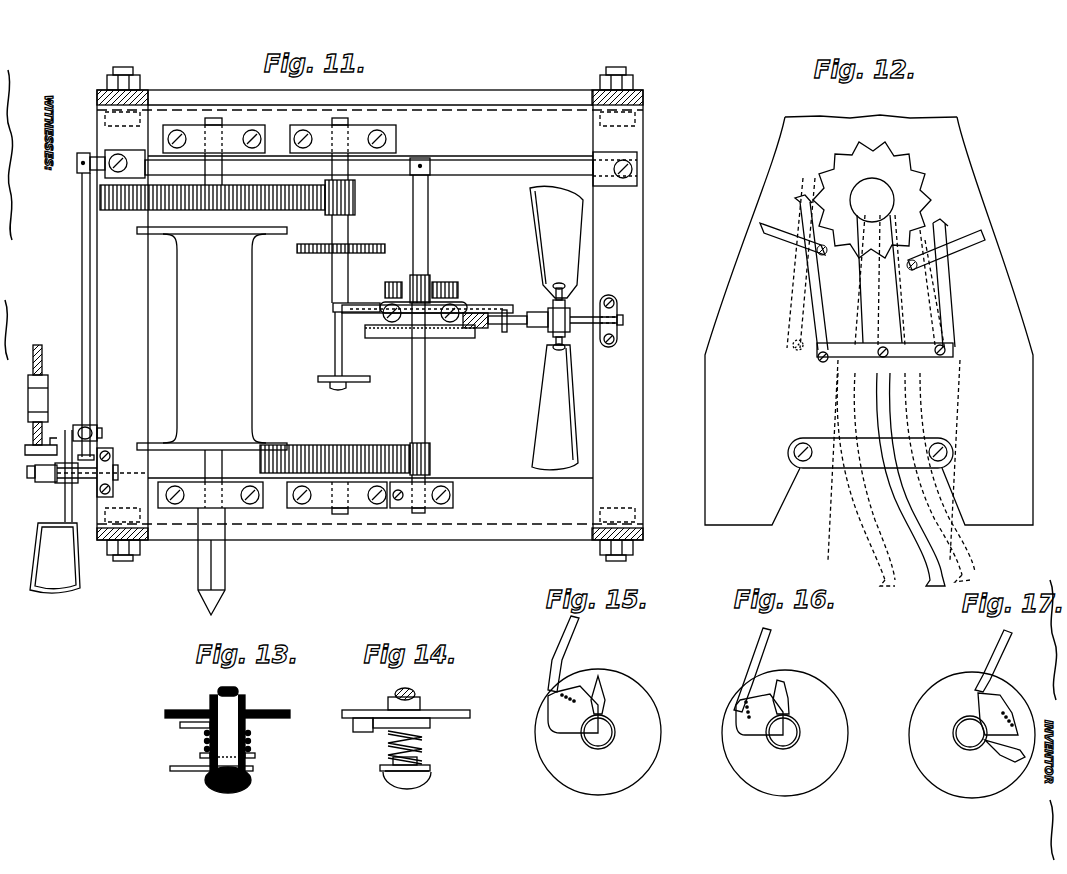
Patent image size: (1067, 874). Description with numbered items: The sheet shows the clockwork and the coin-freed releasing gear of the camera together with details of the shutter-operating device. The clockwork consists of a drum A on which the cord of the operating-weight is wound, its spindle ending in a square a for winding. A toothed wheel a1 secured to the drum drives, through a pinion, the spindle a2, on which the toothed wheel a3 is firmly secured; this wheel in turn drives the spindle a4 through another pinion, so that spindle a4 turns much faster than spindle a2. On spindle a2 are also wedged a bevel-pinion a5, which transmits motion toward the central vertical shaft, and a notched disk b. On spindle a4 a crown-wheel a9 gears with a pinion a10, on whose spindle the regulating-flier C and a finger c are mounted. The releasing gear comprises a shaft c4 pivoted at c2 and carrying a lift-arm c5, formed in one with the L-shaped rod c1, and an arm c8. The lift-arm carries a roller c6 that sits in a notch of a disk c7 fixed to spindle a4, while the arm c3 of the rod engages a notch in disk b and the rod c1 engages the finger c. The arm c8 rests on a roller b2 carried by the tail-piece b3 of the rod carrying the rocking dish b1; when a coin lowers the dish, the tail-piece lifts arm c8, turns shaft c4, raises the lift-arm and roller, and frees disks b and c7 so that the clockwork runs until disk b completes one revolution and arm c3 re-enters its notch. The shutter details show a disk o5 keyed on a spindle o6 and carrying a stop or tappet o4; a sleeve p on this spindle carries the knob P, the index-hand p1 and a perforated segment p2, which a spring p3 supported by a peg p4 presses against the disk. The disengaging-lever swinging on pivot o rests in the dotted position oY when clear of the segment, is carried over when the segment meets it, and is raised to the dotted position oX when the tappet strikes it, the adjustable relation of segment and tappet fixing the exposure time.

In FIG. 11, the roller or drum A is at (212, 338).
In FIG. 11, the square a is at (225, 552).
In FIG. 11, the toothed wheel a1 is at (170, 200).
In FIG. 11, the spindle a2 is at (347, 294).
In FIG. 11, the toothed wheel a3 is at (378, 454).
In FIG. 11, the spindle a4 is at (424, 375).
In FIG. 11, the bevel-pinion a5 is at (304, 254).
In FIG. 11, the crown-wheel a9 is at (384, 334).
In FIG. 11, the pinion a10 is at (470, 330).
In FIG. 11, the disk b is at (356, 378).
In FIG. 11, the swinging plate or dish b1 is at (84, 426).
In FIG. 11, the roller b2 is at (87, 511).
In FIG. 11, the tail-piece b3 is at (66, 428).
In FIG. 11, the regulating-flier C is at (556, 327).
In FIG. 11, the finger c is at (507, 326).
In FIG. 11, the rod c1 is at (487, 313).
In FIG. 11, the pivots c2 is at (150, 154).
In FIG. 11, the arm c3 is at (330, 381).
In FIG. 11, the shaft c4 is at (391, 172).
In FIG. 11, the lift-arm c5 is at (422, 224).
In FIG. 11, the roller c6 is at (430, 283).
In FIG. 11, the disk c7 is at (458, 297).
In FIG. 11, the arm or lever c8 is at (82, 230).
In FIG. 12, the pivot o is at (912, 500).
In FIG. 15, the pivot o is at (578, 641).
In FIG. 16, the pivot o is at (773, 643).
In FIG. 17, the pivot o is at (1010, 645).
In FIG. 12, the raised position of lever O oX is at (970, 580).
In FIG. 12, the rest position of lever O oY is at (866, 487).
In FIG. 15, the stop or tappet o4 is at (548, 694).
In FIG. 16, the stop or tappet o4 is at (737, 706).
In FIG. 17, the stop or tappet o4 is at (1030, 712).
In FIG. 15, the disk o5 is at (655, 718).
In FIG. 16, the disk o5 is at (838, 713).
In FIG. 17, the disk o5 is at (916, 752).
In FIG. 13, the spindle o6 is at (227, 730).
In FIG. 14, the spindle o6 is at (413, 693).
In FIG. 13, the button or knob P is at (230, 795).
In FIG. 14, the button or knob P is at (407, 792).
In FIG. 15, the button or knob P is at (598, 732).
In FIG. 16, the button or knob P is at (783, 732).
In FIG. 17, the button or knob P is at (970, 733).
In FIG. 13, the sleeve p is at (255, 740).
In FIG. 14, the sleeve p is at (393, 760).
In FIG. 13, the index-hand p1 is at (180, 771).
In FIG. 14, the index-hand p1 is at (430, 774).
In FIG. 15, the index-hand p1 is at (604, 698).
In FIG. 16, the index-hand p1 is at (787, 699).
In FIG. 17, the index-hand p1 is at (1006, 754).
In FIG. 13, the segment p2 is at (183, 727).
In FIG. 14, the segment p2 is at (390, 729).
In FIG. 15, the segment p2 is at (566, 734).
In FIG. 16, the segment p2 is at (753, 738).
In FIG. 17, the segment p2 is at (982, 713).
In FIG. 13, the spring p3 is at (256, 757).
In FIG. 14, the spring p3 is at (425, 753).
In FIG. 13, the peg p4 is at (201, 755).
In FIG. 14, the peg p4 is at (431, 768).